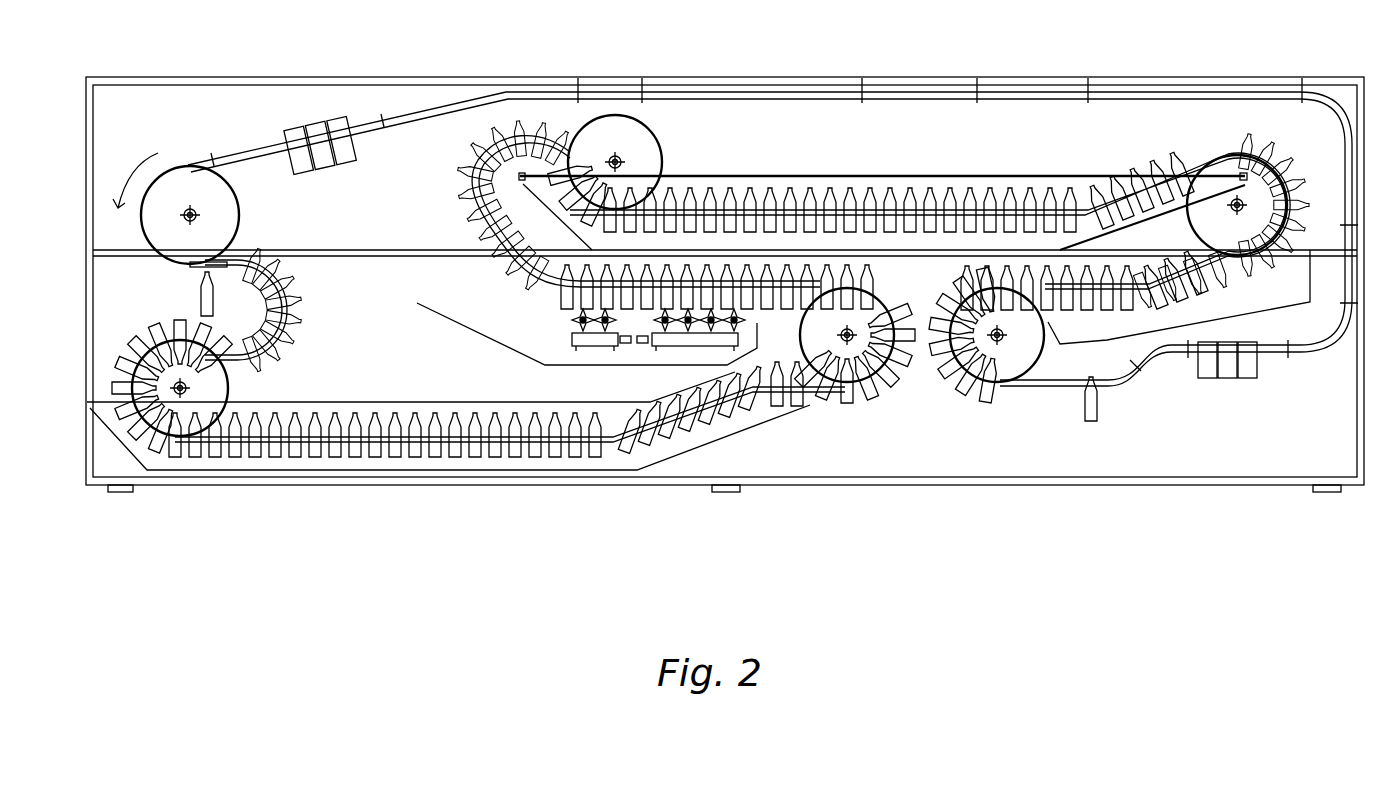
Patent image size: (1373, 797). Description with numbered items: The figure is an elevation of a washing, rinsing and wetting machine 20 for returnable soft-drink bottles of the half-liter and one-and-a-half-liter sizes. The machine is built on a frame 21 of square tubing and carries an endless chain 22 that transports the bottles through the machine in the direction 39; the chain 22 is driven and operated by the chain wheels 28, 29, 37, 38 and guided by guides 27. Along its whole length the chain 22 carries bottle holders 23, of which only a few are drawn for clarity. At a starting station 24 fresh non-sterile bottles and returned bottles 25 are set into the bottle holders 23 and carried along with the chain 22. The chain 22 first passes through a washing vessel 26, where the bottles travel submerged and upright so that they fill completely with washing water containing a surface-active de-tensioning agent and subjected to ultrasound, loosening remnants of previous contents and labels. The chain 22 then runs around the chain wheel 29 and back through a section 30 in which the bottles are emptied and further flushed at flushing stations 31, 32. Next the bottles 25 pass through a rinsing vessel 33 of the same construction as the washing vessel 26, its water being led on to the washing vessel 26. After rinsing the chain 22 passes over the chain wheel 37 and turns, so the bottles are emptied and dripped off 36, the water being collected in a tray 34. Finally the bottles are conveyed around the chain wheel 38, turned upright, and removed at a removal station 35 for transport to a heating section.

The washing, rinsing and wetting machine 20 is at (1216, 554).
The frame 21 is at (152, 82).
The endless chain 22 is at (230, 152).
The bottle holders 23 is at (326, 158).
The starting station 24 is at (182, 295).
The bottles 25 is at (462, 206).
The washing vessel 26 is at (412, 403).
The guides 27 is at (538, 138).
The chain wheel 28 is at (222, 210).
The chain wheel 29 is at (823, 342).
The section 30 is at (713, 266).
The flushing station 31 is at (722, 338).
The flushing station 32 is at (577, 339).
The rinsing vessel 33 is at (923, 176).
The tray 34 is at (1270, 306).
The removal station 35 is at (1118, 412).
The dripping off 36 is at (1230, 296).
The chain wheel 37 is at (1213, 220).
The chain wheel 38 is at (1020, 338).
The direction 39 is at (134, 161).